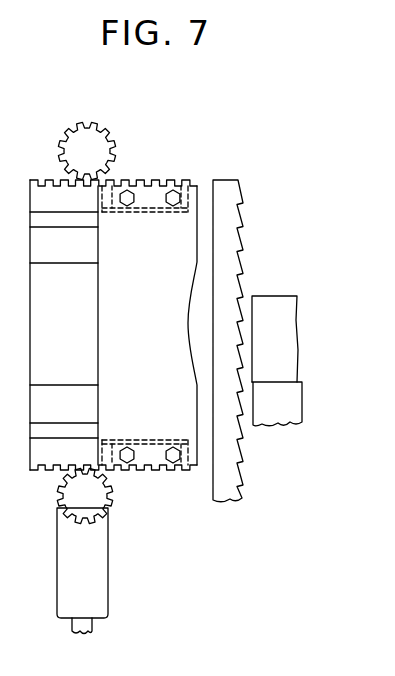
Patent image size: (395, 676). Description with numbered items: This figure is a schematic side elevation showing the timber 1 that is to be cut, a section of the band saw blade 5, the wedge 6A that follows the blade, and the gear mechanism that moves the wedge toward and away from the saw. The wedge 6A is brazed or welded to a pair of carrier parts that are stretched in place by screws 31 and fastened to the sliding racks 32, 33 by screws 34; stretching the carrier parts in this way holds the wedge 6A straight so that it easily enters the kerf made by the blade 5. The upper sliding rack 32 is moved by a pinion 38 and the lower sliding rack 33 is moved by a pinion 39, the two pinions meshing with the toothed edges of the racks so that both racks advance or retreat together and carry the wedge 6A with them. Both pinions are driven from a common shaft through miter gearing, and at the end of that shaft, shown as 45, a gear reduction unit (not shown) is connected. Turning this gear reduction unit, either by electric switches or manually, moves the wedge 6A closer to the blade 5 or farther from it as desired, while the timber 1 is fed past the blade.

The timber 1 is at (304, 321).
The saw or blade 5 is at (245, 220).
The wedge 6A is at (93, 320).
The screws 31 is at (108, 221).
The sliding rack 32 is at (165, 176).
The sliding rack 33 is at (158, 477).
The screws 34 is at (165, 199).
The pinion 38 is at (117, 143).
The pinion 39 is at (115, 502).
The end of shaft 45 is at (96, 634).